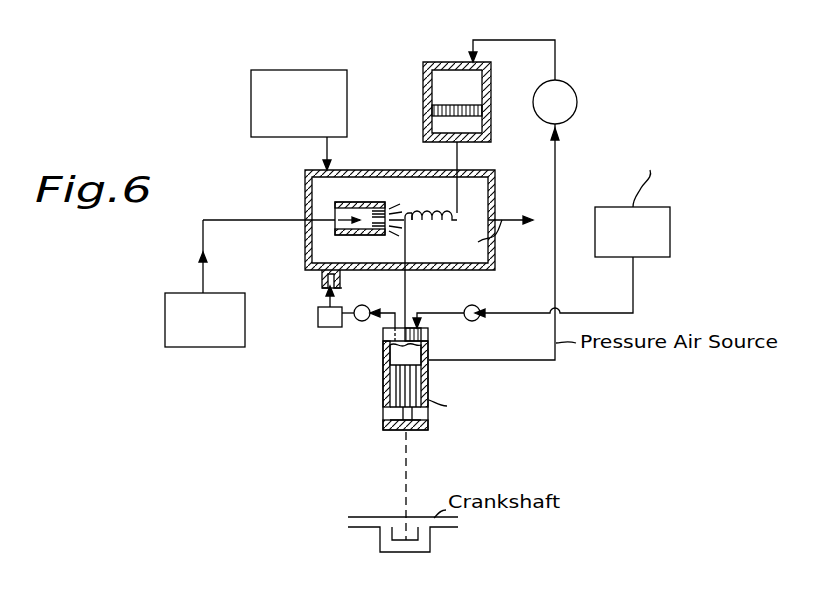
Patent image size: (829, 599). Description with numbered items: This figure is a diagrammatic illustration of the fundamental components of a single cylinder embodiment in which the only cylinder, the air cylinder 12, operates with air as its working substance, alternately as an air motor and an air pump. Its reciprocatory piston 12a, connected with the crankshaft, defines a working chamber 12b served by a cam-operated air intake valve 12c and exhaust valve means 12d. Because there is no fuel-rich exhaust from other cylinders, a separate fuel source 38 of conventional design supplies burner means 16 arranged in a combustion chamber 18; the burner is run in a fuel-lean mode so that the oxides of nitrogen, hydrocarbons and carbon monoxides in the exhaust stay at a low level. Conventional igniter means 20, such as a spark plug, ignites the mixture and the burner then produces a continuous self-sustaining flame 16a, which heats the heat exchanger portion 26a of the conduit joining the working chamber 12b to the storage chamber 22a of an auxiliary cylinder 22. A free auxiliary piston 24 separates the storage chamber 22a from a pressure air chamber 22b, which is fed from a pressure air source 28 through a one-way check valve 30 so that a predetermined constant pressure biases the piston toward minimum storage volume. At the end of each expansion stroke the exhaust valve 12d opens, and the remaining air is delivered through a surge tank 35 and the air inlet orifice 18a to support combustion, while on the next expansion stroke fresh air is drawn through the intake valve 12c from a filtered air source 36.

The air cylinder 12 is at (383, 422).
The reciprocatory piston 12a is at (400, 390).
The working chamber 12b is at (417, 347).
The air intake valve 12c is at (473, 305).
The exhaust valve means 12d is at (380, 292).
The burner means 16 is at (372, 202).
The flame 16a is at (389, 206).
The combustion chamber 18 is at (305, 190).
The air inlet orifice 18a is at (329, 268).
The igniter means 20 is at (251, 98).
The auxiliary cylinder 22 is at (440, 61).
The storage chamber 22a is at (442, 124).
The pressure air chamber 22b is at (478, 88).
The auxiliary piston 24 is at (443, 102).
The heat exchanger portion 26a is at (425, 213).
The pressure air source 28 is at (554, 243).
The one-way check valve 30 is at (570, 89).
The surge tank 35 is at (318, 314).
The filtered air source 36 is at (670, 240).
The fuel source 38 is at (206, 347).